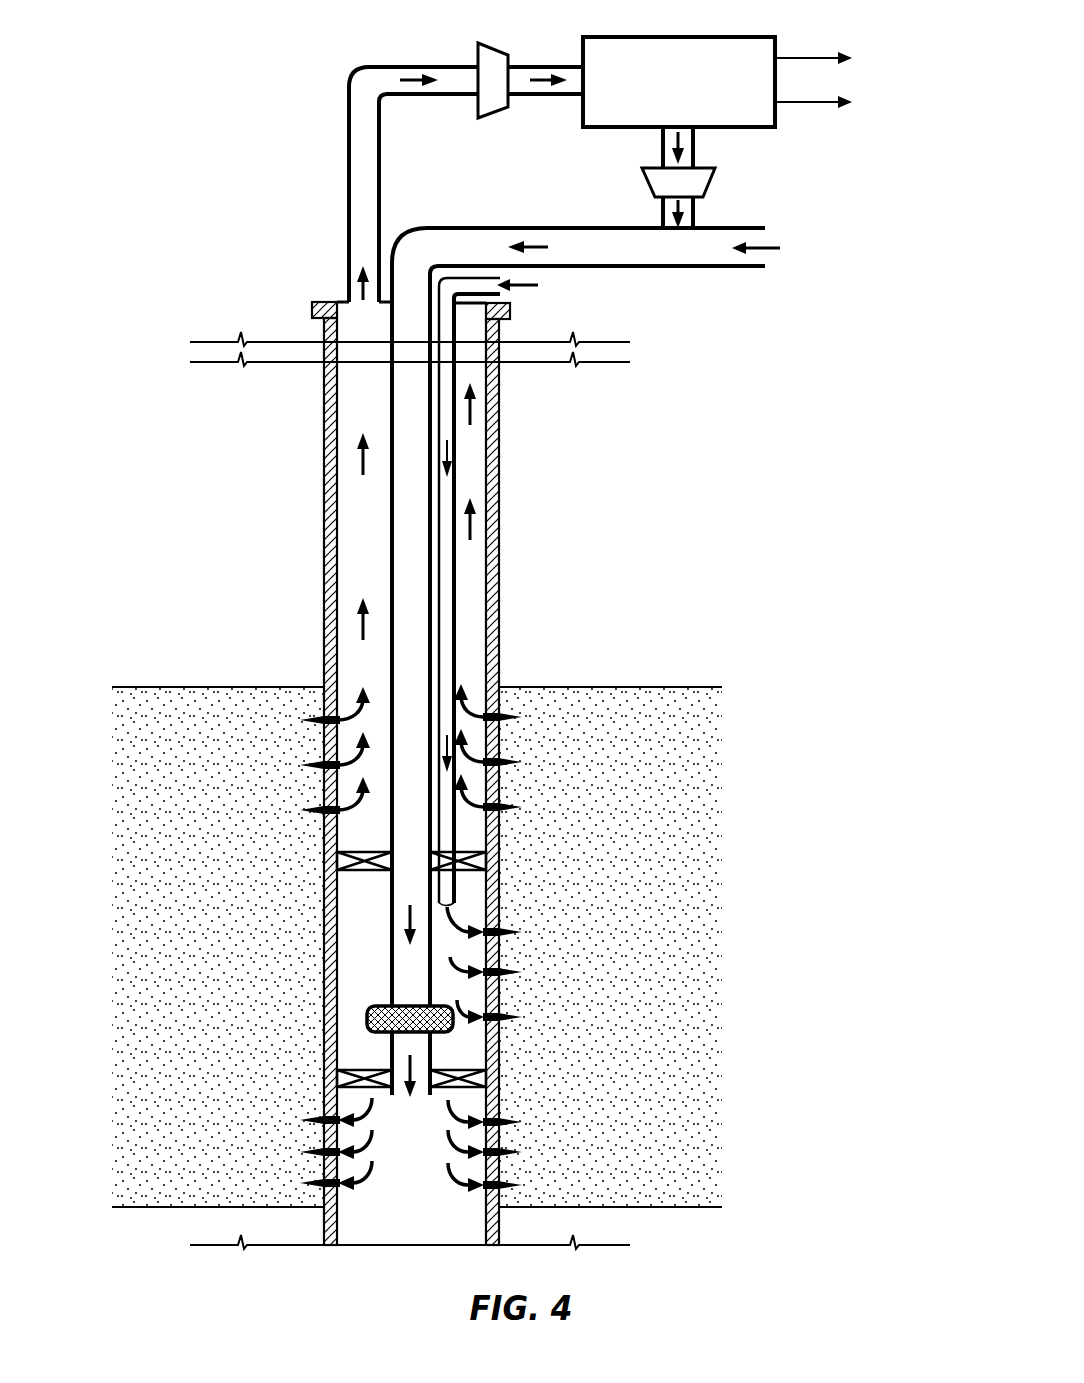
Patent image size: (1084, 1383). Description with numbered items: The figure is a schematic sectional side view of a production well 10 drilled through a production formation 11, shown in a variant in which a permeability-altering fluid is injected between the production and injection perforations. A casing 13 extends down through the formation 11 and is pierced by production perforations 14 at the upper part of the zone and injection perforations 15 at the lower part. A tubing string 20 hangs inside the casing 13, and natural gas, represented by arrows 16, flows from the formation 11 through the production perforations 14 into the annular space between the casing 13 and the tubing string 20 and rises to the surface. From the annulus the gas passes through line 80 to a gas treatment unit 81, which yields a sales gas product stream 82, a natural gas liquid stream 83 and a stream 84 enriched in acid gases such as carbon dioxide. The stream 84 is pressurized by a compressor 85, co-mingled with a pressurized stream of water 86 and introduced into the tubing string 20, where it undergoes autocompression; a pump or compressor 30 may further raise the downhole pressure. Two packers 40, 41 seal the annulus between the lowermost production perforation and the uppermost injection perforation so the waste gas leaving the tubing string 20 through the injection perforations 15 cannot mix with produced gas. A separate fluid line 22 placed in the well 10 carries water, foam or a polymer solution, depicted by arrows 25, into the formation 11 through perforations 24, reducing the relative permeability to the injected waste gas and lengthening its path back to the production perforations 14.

The production well 10 is at (512, 659).
The production formation 11 is at (607, 961).
The production casing 13 is at (324, 590).
The production perforations 14 is at (304, 808).
The injection perforations 15 is at (305, 1152).
The natural gas flow 16 is at (338, 737).
The tubing string 20 is at (392, 412).
The fluid line 22 is at (457, 570).
The perforations 24 is at (487, 1017).
The permeability-altering agent flow 25 is at (487, 972).
The pump or compressor 30 is at (367, 1017).
The packer 40 is at (345, 1071).
The uppermost packer 41 is at (345, 872).
The line 80 is at (349, 122).
The gas treatment unit 81 is at (724, 37).
The product stream 82 is at (792, 58).
The natural gas liquid stream 83 is at (792, 104).
The acid gas enriched stream 84 is at (695, 149).
The compressor 85 is at (709, 192).
The pressurized water stream 86 is at (780, 247).